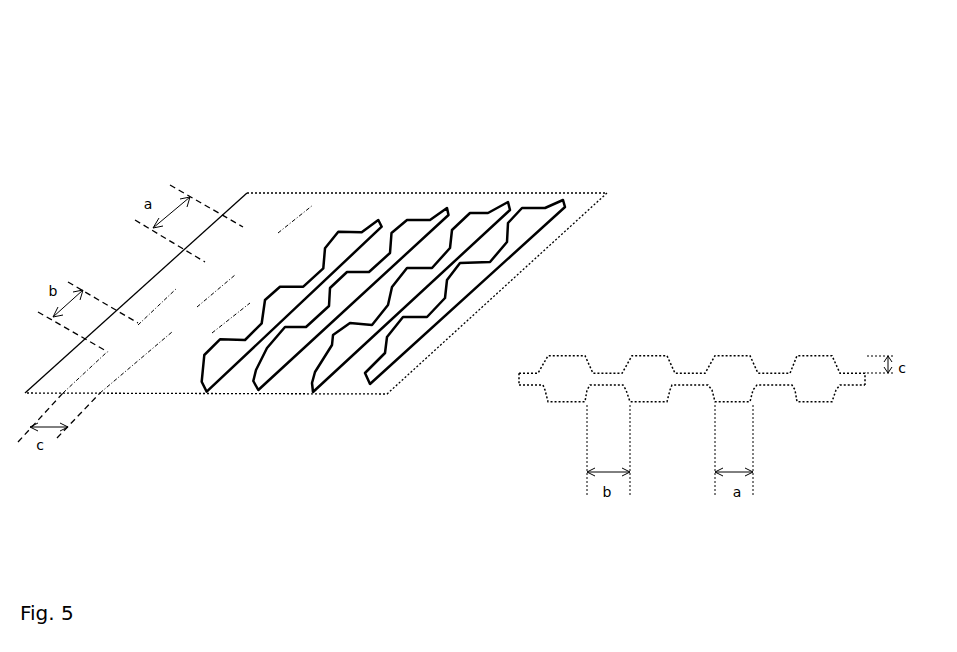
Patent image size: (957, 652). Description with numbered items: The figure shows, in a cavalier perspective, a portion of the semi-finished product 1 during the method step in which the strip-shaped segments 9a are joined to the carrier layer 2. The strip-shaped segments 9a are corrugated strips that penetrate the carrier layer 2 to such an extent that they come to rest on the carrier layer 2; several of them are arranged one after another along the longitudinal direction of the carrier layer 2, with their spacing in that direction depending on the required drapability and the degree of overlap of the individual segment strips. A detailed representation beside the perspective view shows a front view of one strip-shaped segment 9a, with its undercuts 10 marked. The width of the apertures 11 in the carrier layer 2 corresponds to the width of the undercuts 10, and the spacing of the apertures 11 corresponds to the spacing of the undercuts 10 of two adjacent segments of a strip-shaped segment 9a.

The semi-finished product 1 is at (678, 230).
The carrier layer 2 is at (572, 220).
The strip-shaped segment 9a is at (413, 218).
The undercut 10 is at (767, 388).
The aperture 11 is at (279, 232).